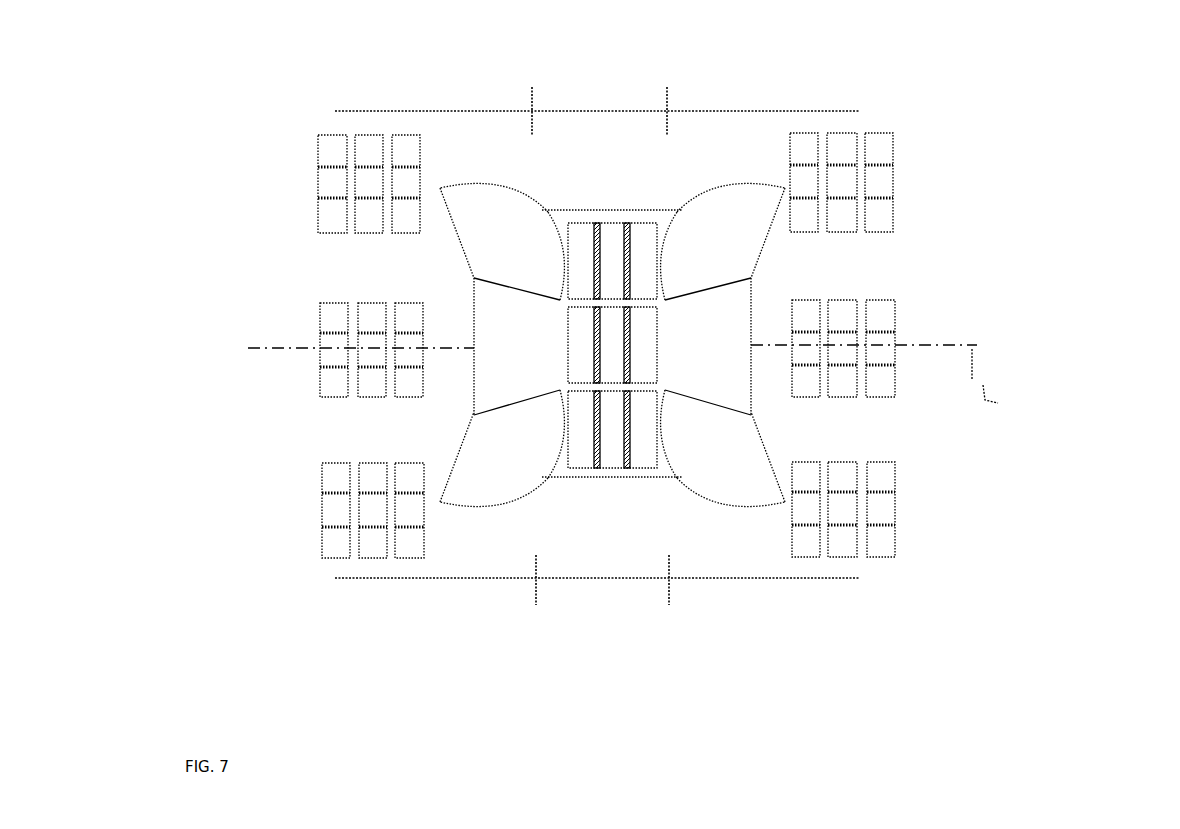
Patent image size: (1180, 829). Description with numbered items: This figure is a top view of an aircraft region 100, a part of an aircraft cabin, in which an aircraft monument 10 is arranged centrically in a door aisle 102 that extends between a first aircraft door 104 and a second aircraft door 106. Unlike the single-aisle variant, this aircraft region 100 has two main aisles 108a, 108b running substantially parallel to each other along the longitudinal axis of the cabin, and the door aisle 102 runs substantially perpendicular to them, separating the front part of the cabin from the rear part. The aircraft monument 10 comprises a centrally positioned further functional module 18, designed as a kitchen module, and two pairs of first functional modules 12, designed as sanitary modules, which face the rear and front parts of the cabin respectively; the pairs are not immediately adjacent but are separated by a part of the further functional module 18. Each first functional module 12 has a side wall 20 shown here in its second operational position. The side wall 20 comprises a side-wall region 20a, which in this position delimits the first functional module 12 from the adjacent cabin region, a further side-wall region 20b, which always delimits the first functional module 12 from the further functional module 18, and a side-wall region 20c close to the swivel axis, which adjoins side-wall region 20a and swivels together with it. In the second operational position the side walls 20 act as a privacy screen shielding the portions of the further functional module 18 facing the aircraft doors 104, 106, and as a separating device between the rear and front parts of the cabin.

The aircraft monument 10 is at (728, 136).
The first functional module 12 is at (514, 284).
The further functional module 18 is at (605, 212).
The side wall 20 is at (522, 193).
The side-wall region 20a is at (468, 183).
The further side-wall region 20b is at (557, 237).
The side-wall region close to the swivel axis 20c is at (457, 237).
The aircraft region 100 is at (1066, 117).
The door aisle 102 is at (617, 540).
The first aircraft door 104 is at (585, 108).
The second aircraft door 106 is at (605, 582).
The main aisle 108a is at (330, 432).
The main aisle 108b is at (333, 265).